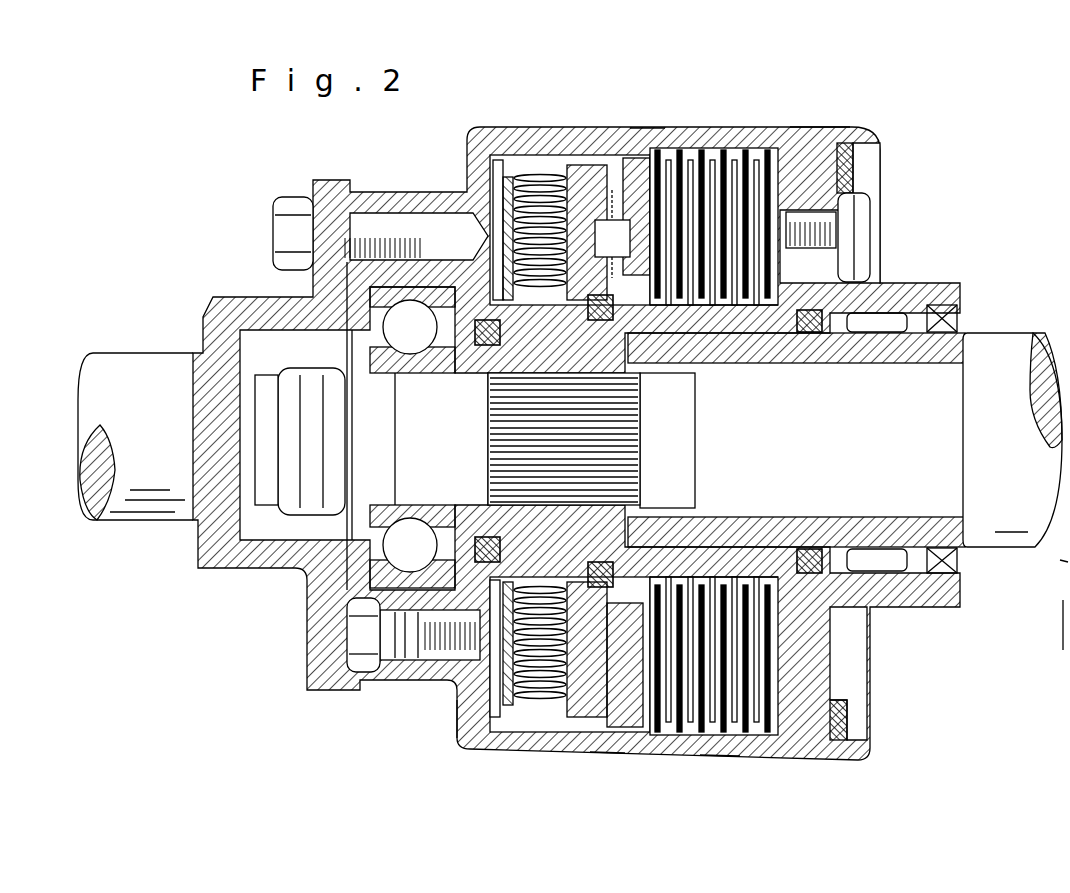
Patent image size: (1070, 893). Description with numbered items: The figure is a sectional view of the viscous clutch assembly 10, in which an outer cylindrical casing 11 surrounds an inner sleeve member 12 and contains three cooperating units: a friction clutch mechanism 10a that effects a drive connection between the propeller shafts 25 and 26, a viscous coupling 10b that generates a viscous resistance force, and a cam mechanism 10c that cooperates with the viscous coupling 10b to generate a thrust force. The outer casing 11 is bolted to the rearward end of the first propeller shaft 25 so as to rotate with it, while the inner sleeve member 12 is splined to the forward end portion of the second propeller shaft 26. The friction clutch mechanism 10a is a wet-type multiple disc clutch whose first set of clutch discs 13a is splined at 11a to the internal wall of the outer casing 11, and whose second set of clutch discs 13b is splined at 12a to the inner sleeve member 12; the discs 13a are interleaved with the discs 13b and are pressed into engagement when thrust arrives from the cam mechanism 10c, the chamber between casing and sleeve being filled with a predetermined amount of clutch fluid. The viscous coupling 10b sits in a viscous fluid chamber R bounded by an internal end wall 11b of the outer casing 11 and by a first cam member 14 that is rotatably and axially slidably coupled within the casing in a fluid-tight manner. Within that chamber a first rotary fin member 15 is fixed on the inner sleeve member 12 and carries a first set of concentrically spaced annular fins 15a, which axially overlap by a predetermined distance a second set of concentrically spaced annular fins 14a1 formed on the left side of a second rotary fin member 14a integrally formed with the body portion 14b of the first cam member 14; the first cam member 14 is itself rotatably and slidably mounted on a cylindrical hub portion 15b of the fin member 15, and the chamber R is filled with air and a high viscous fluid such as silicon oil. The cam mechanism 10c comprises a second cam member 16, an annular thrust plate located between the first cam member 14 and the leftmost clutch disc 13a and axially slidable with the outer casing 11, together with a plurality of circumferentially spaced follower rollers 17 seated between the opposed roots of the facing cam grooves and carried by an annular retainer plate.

The viscous clutch assembly 10 is at (920, 134).
The friction clutch mechanism 10a is at (720, 742).
The viscous coupling 10b is at (493, 725).
The cam mechanism 10c is at (606, 742).
The outer cylindrical casing 11 is at (835, 123).
The spline of outer casing 11a is at (727, 158).
The internal end wall 11b is at (462, 690).
The inner sleeve member 12 is at (858, 518).
The spline of inner sleeve member 12a is at (735, 322).
The first set of clutch discs 13a is at (680, 726).
The second set of clutch discs 13b is at (770, 730).
The first cam member 14 is at (540, 722).
The second rotary fin member 14a is at (590, 330).
The second set of concentrically spaced annular fins 14a1 is at (527, 590).
The body portion 14b is at (585, 712).
The first rotary fin member 15 is at (490, 222).
The first set of concentrically spaced annular fins 15a is at (540, 255).
The cylindrical hub portion 15b is at (612, 562).
The second cam member 16 is at (648, 142).
The follower rollers 17 is at (615, 222).
The first propeller shaft 25 is at (130, 365).
The second propeller shaft 26 is at (1000, 350).
The viscous fluid chamber R is at (492, 712).